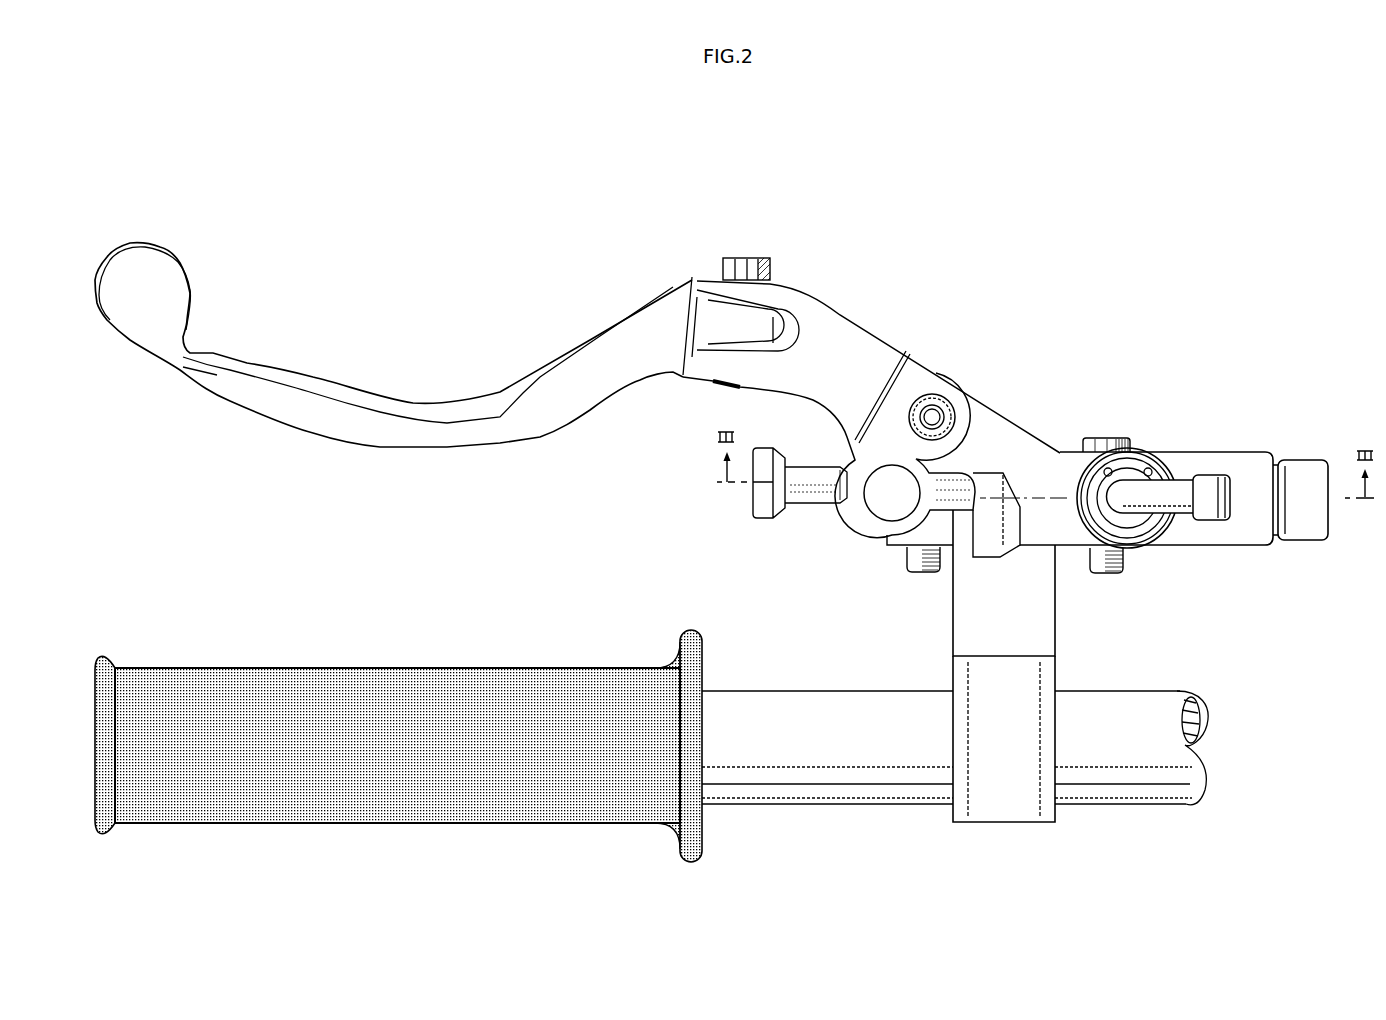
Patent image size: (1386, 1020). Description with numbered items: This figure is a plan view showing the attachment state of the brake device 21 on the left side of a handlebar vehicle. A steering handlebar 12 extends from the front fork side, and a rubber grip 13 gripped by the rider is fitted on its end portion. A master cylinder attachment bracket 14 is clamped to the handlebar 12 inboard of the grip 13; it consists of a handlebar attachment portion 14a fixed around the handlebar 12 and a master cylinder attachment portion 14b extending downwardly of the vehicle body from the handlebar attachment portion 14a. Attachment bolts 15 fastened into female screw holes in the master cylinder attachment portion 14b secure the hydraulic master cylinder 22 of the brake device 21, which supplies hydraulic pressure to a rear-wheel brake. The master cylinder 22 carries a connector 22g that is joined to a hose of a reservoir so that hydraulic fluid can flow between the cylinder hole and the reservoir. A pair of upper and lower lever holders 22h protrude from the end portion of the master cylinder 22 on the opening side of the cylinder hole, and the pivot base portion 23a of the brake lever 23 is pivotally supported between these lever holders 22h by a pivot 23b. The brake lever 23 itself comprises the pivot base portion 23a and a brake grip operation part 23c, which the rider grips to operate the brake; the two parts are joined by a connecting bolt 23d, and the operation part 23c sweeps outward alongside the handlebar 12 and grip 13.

The steering handlebar 12 is at (802, 788).
The rubber grip 13 is at (423, 810).
The master cylinder attachment bracket 14 is at (1038, 704).
The handlebar attachment portion 14a is at (1018, 808).
The master cylinder attachment portion 14b is at (1040, 595).
The attachment bolt 15 is at (903, 557).
The brake device 21 is at (1107, 478).
The hydraulic master cylinder 22 is at (1233, 537).
The connector 22g is at (1180, 490).
The lever holder 22h is at (957, 388).
The brake lever 23 is at (577, 368).
The pivot base portion 23a is at (913, 365).
The pivot 23b is at (950, 426).
The brake grip operation part 23c is at (510, 393).
The connecting bolt 23d is at (747, 257).